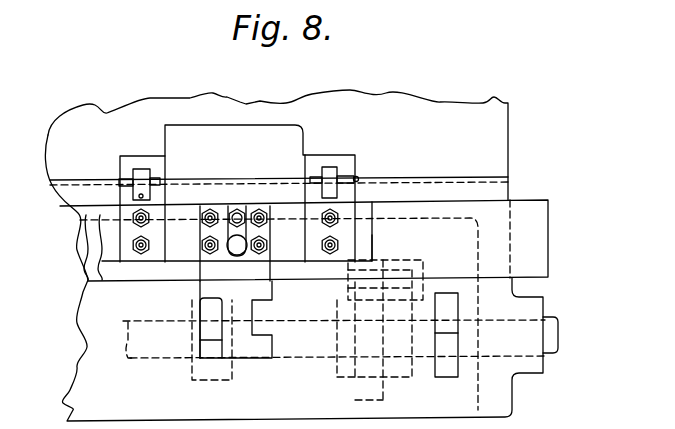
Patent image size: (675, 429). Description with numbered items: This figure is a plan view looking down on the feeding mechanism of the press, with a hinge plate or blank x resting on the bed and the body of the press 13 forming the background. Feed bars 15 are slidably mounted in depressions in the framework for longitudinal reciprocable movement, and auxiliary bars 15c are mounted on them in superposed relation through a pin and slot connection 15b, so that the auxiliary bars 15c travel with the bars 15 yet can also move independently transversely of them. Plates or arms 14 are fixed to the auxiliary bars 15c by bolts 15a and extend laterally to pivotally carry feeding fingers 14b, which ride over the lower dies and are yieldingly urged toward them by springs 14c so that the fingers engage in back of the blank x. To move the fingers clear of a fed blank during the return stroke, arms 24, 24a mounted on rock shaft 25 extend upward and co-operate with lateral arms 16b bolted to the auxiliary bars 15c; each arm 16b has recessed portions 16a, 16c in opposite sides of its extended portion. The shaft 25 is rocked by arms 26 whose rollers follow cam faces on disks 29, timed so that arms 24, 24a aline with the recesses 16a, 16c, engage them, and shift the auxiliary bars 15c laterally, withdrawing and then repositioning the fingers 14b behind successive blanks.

The body 13 is at (294, 255).
The plate or arm 14 is at (107, 197).
The feeding finger 14b is at (119, 161).
The spring 14c is at (140, 176).
The bar 15 is at (543, 222).
The bolts 15a is at (137, 230).
The pin and slot connection 15b is at (236, 234).
The auxiliary bar 15c is at (372, 248).
The recessed portion 16a is at (255, 322).
The arm 16b is at (207, 287).
The recessed portion 16c is at (222, 298).
The arm 24 is at (205, 325).
The arm 24a is at (450, 323).
The rock shaft 25 is at (145, 360).
The arm 26 is at (407, 310).
The disk 29 is at (385, 391).
The hinge plate or blank x is at (222, 133).